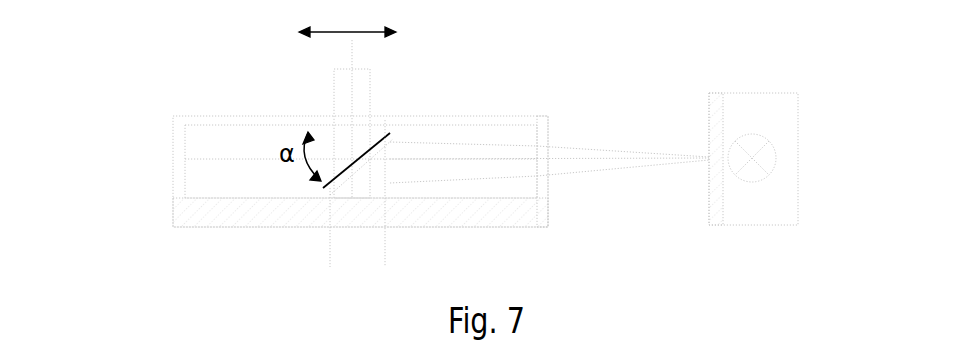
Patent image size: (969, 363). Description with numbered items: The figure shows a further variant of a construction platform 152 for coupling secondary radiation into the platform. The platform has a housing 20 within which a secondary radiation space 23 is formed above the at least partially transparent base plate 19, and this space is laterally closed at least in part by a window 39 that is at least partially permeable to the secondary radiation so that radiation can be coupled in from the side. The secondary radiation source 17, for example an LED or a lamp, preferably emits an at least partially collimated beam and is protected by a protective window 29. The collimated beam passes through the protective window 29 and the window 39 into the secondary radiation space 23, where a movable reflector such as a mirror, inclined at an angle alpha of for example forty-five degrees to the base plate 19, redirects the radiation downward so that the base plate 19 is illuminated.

The construction platform 152 is at (145, 88).
The housing 20 is at (182, 117).
The secondary radiation space 23 is at (219, 199).
The base plate 19 is at (258, 208).
The window 39 is at (542, 128).
The protective window 29 is at (713, 207).
The secondary radiation source 17 is at (770, 158).